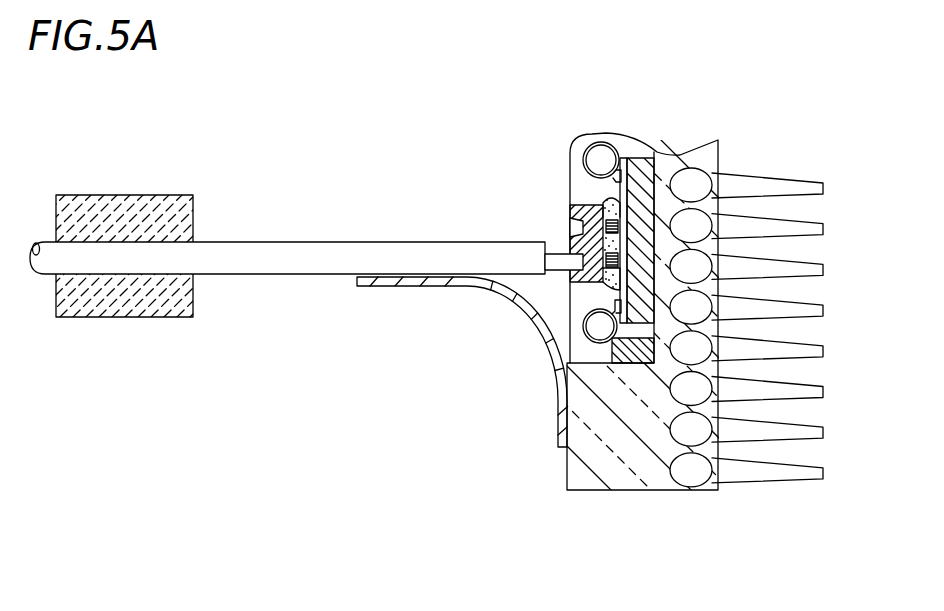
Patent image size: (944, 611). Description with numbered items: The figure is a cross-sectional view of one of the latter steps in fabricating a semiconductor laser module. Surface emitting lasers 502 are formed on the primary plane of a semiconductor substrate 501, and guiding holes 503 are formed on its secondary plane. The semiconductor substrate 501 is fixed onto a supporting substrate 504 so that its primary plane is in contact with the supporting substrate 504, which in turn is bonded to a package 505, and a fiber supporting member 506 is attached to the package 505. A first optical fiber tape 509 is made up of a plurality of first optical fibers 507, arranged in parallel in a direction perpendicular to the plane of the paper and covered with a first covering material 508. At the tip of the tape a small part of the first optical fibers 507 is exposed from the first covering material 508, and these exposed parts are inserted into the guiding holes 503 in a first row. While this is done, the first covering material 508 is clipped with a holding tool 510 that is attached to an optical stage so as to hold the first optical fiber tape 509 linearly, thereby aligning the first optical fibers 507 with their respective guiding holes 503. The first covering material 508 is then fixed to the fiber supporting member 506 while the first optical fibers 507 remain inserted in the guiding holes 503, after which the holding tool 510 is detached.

The semiconductor substrate 501 is at (572, 205).
The surface emitting lasers 502 is at (608, 207).
The guiding holes 503 is at (571, 250).
The supporting substrate 504 is at (622, 300).
The package 505 is at (625, 483).
The fiber supporting member 506 is at (453, 277).
The first optical fibers 507 is at (552, 273).
The first covering material 508 is at (343, 257).
The first optical fiber tape 509 is at (306, 325).
The holding tool 510 is at (113, 197).